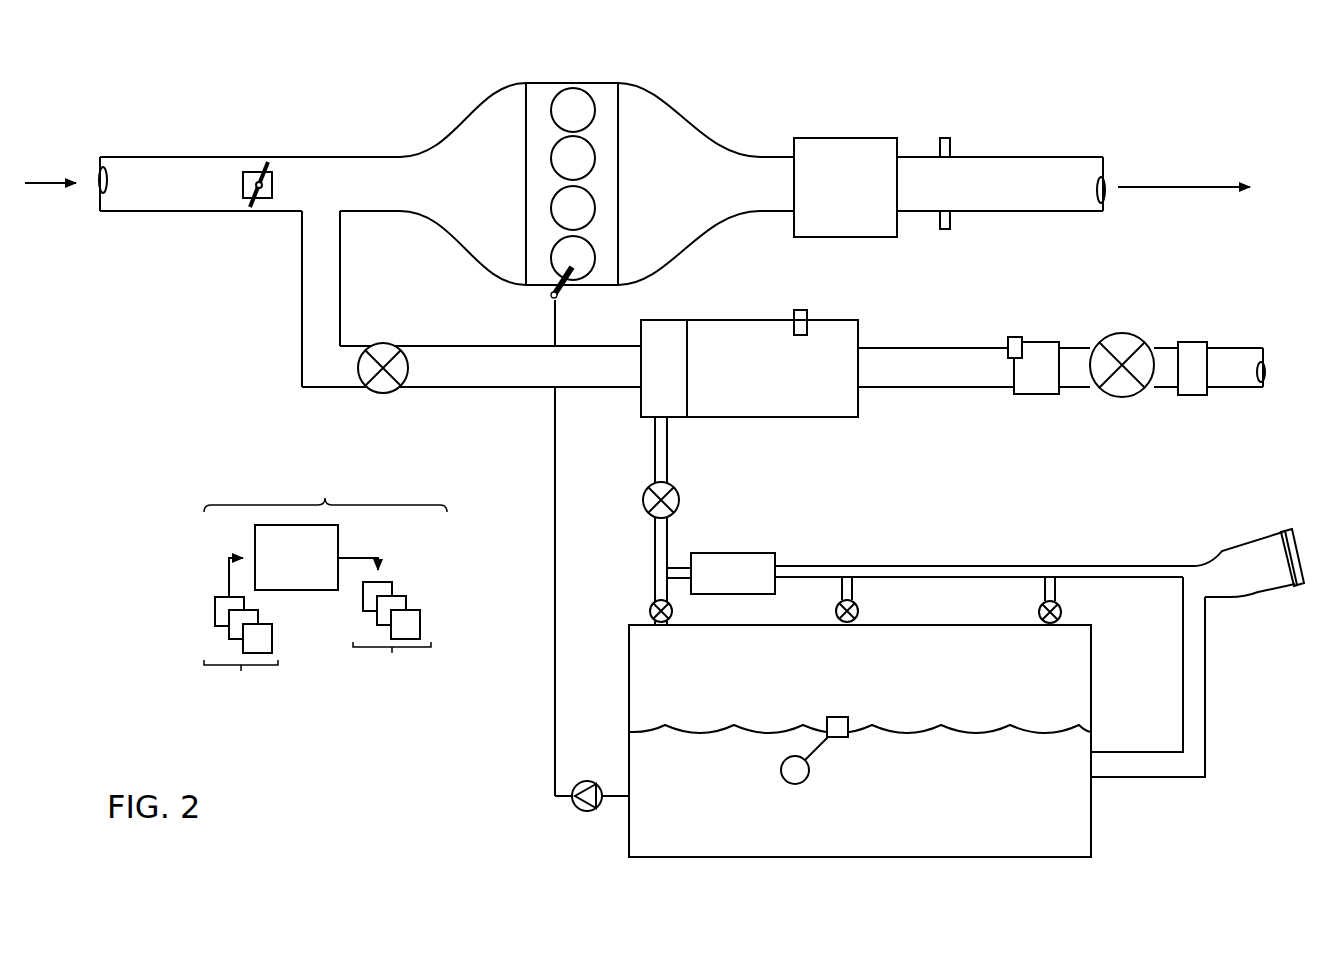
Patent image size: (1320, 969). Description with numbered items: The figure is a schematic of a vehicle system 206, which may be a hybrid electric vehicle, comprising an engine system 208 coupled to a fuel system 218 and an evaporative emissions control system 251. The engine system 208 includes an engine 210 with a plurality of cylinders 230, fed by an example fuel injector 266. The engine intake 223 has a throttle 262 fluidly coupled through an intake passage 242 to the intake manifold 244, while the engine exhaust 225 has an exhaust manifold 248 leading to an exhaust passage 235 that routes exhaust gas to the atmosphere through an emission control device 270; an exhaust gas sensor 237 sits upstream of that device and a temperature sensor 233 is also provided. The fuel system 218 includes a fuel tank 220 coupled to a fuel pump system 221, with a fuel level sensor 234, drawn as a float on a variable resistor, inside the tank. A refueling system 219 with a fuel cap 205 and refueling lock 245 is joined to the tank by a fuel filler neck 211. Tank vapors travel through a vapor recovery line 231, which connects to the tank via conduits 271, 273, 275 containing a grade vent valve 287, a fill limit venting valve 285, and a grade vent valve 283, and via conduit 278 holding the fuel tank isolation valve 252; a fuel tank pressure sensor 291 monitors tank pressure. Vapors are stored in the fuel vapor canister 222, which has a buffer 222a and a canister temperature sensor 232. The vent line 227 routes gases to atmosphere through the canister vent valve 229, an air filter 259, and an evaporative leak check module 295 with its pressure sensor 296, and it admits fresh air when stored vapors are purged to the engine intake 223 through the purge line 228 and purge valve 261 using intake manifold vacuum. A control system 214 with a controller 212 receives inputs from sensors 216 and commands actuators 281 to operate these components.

The fuel cap 205 is at (1287, 535).
The vehicle system 206 is at (110, 80).
The engine system 208 is at (912, 80).
The engine 210 is at (590, 184).
The fuel filler pipe or neck 211 is at (1185, 675).
The controller 212 is at (296, 557).
The control system 214 is at (325, 585).
The sensors 216 is at (241, 636).
The fuel system 218 is at (1140, 812).
The refueling system 219 is at (1256, 525).
The fuel tank 220 is at (1091, 722).
The fuel pump system 221 is at (590, 781).
The fuel vapor canister 222 is at (770, 355).
The buffer 222a is at (660, 320).
The engine intake 223 is at (455, 105).
The engine exhaust 225 is at (787, 92).
The vent line 227 is at (1061, 367).
The purge line 228 is at (471, 366).
The canister vent valve 229 is at (1118, 333).
The cylinders 230 is at (593, 104).
The vapor recovery line 231 is at (1110, 564).
The canister temperature sensor 232 is at (800, 310).
The temperature sensor 233 is at (939, 220).
The fuel level sensor 234 is at (838, 717).
The exhaust passage 235 is at (1060, 157).
The exhaust gas sensor 237 is at (939, 150).
The intake passage 242 is at (292, 211).
The intake manifold 244 is at (463, 184).
The refueling lock 245 is at (1286, 590).
The exhaust manifold 248 is at (706, 184).
The emissions control system 251 is at (1252, 298).
The fuel tank isolation valve 252 is at (650, 513).
The air filter 259 is at (1195, 342).
The purge valve 261 is at (385, 343).
The throttle 262 is at (272, 188).
The fuel injector 266 is at (562, 287).
The emission control device 270 is at (832, 138).
The conduit 271 is at (668, 583).
The conduit 273 is at (840, 590).
The conduit 275 is at (1043, 590).
The conduit 278 is at (654, 447).
The actuators 281 is at (384, 628).
The grade vent valve 283 is at (1061, 612).
The fill limit venting valve 285 is at (858, 612).
The grade vent valve 287 is at (649, 611).
The fuel tank pressure sensor 291 is at (775, 564).
The evaporative leak check module 295 is at (1040, 342).
The pressure sensor 296 is at (1012, 337).